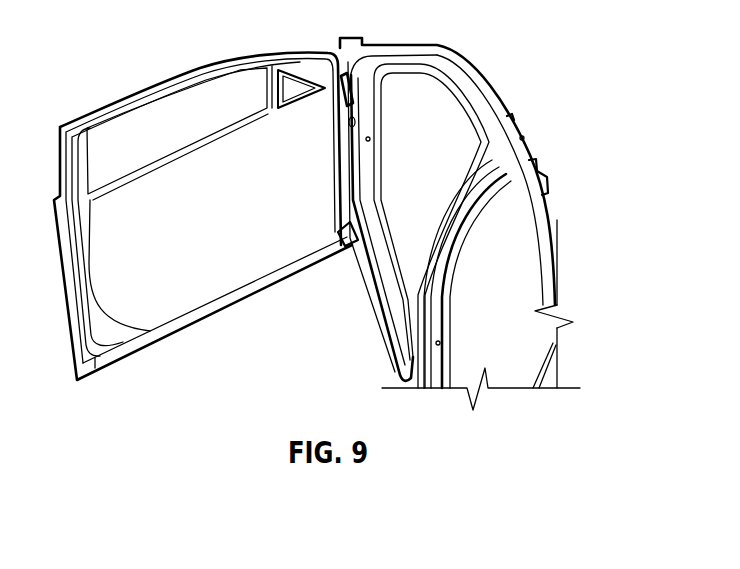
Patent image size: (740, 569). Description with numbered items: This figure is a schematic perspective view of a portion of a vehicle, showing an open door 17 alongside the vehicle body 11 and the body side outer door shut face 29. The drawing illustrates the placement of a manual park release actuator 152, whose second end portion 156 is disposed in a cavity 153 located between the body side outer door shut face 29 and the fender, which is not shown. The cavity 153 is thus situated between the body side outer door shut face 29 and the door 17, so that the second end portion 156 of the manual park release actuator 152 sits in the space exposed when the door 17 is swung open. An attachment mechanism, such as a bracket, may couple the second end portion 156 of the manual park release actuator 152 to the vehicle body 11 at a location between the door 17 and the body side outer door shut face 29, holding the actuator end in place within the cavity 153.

The vehicle body 11 is at (437, 54).
The door 17 is at (177, 312).
The body side outer door shut face 29 is at (368, 162).
The manual park release actuator 152 is at (340, 58).
The cavity 153 is at (350, 248).
The second end portion 156 is at (355, 127).